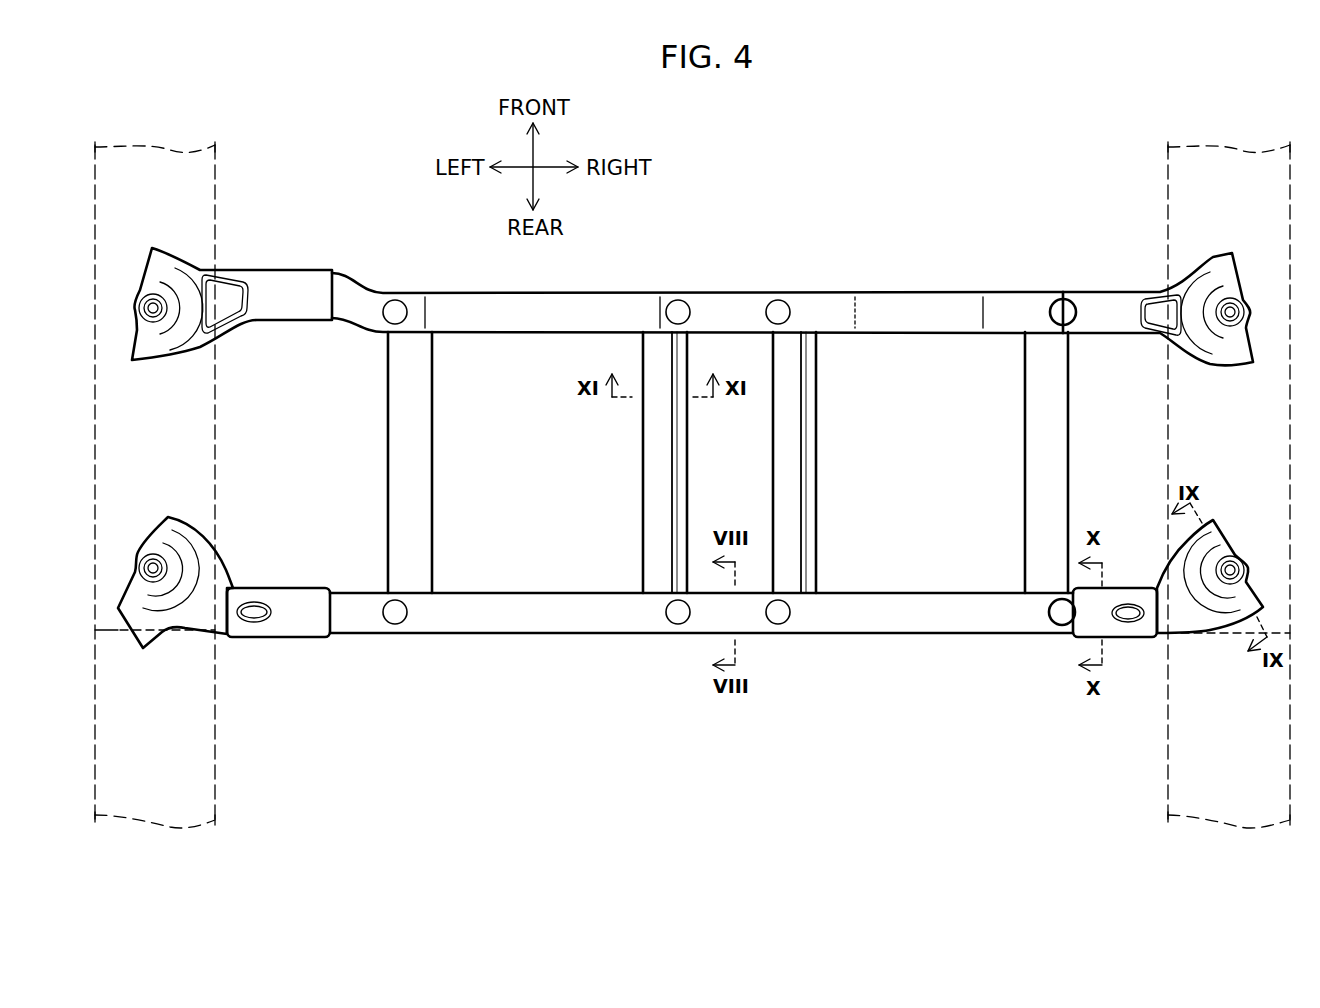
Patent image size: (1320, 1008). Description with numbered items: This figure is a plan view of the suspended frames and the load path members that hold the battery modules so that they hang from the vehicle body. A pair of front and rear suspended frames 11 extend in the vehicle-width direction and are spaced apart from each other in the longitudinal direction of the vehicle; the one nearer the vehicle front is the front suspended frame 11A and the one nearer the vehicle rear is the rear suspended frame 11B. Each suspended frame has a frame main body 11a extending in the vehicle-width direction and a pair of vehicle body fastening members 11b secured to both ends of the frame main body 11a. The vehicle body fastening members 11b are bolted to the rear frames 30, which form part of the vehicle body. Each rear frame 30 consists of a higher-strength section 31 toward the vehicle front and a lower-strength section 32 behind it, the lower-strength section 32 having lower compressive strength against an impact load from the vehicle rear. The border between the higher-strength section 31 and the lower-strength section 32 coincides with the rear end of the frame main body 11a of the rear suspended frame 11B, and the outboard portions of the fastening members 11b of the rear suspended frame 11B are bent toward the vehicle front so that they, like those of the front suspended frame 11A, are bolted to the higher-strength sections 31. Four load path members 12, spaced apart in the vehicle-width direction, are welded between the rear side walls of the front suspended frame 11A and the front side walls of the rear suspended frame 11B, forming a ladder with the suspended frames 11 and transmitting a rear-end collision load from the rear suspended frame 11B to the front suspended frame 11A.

The suspended frame 11 is at (701, 465).
The front suspended frame 11A is at (899, 288).
The rear suspended frame 11B is at (893, 638).
The frame main body 11a is at (732, 305).
The vehicle body fastening member 11b is at (172, 260).
The load path member 12 is at (648, 462).
The rear frame 30 is at (215, 418).
The higher-strength section 31 is at (215, 485).
The lower-strength section 32 is at (215, 755).